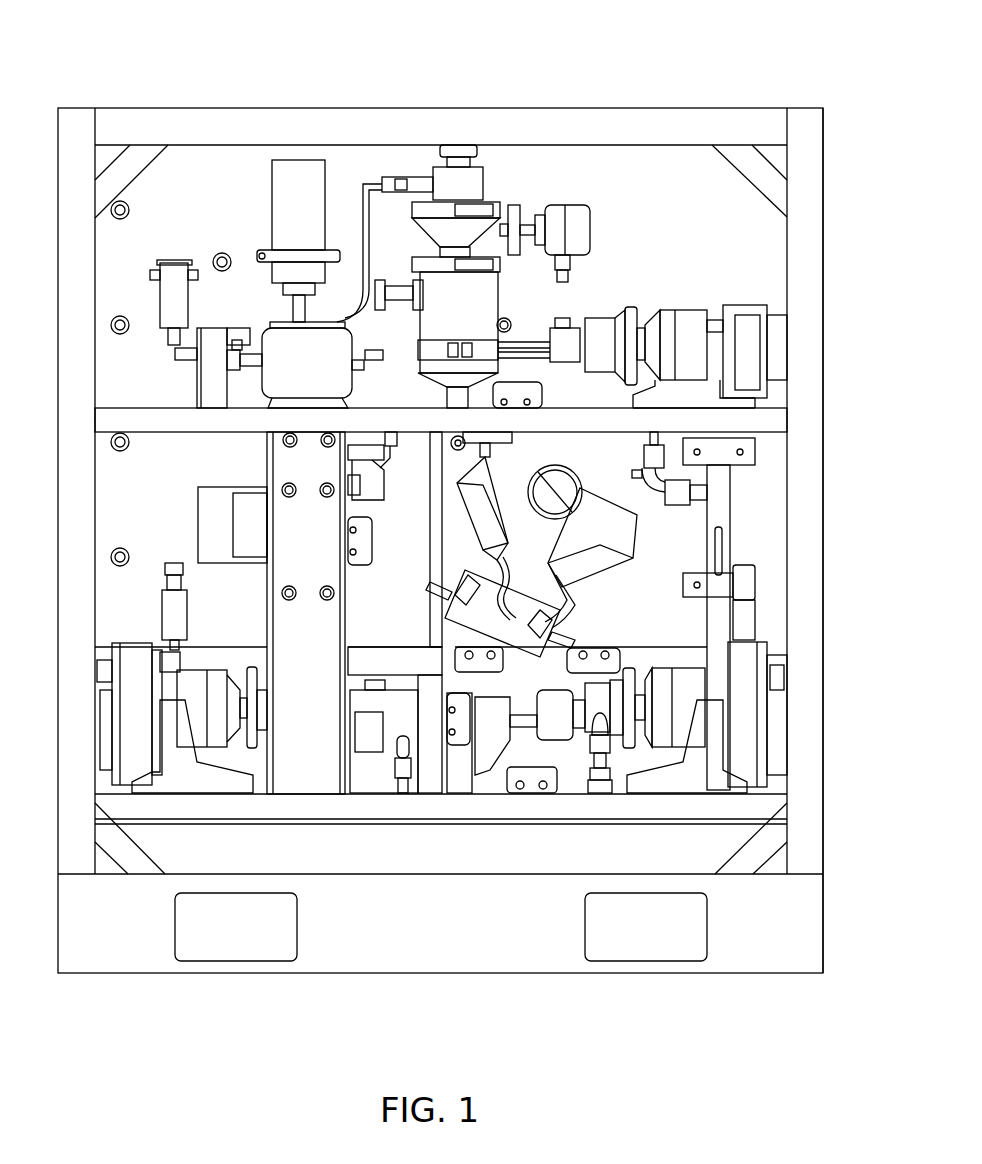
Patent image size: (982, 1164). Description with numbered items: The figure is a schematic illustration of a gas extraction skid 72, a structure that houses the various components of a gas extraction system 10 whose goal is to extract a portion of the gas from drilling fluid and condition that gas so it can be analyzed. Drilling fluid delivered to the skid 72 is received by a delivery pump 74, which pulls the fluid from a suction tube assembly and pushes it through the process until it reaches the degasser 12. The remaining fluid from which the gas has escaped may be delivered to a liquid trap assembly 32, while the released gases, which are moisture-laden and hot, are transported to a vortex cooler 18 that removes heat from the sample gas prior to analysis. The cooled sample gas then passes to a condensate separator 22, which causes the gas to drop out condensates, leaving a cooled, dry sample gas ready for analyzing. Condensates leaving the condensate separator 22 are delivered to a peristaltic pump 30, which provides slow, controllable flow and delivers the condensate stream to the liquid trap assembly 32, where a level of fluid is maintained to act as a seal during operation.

The gas extraction system 10 is at (655, 101).
The degasser 12 is at (512, 297).
The vortex cooler 18 is at (311, 212).
The condensate separator 22 is at (178, 300).
The peristaltic pump 30 is at (198, 382).
The liquid trap assembly 32 is at (388, 444).
The gas extraction skid 72 is at (824, 534).
The delivery pump 74 is at (710, 786).